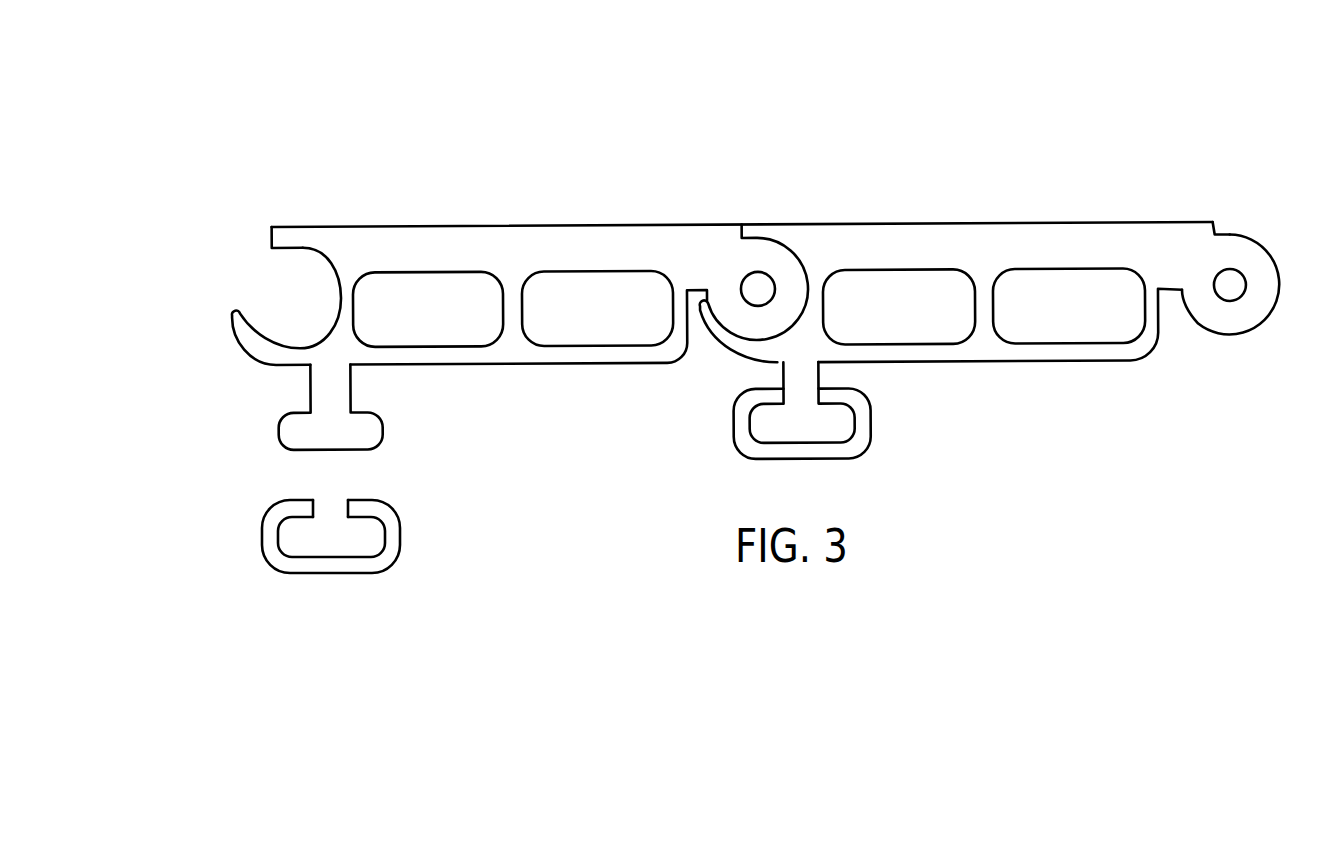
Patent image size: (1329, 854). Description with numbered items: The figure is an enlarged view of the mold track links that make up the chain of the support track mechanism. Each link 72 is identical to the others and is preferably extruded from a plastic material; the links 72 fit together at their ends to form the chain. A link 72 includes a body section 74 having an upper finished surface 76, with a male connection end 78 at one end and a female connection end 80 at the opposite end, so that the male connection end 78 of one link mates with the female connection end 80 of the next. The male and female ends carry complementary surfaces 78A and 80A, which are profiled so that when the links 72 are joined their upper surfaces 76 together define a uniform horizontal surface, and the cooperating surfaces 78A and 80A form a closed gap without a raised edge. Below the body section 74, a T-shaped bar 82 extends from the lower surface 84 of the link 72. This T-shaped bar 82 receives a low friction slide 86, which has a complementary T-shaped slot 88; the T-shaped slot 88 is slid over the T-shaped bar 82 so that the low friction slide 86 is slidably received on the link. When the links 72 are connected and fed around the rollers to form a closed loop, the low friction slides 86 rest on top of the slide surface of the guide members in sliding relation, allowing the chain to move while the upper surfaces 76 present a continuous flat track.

The link 72 is at (445, 225).
The body section 74 is at (624, 257).
The upper finished surface 76 is at (387, 227).
The male connection end 78 is at (783, 317).
The complementary surface of male connection end 78A is at (1217, 227).
The female connection end 80 is at (317, 332).
The complementary surface of female connection end 80A is at (271, 236).
The T-shaped bar 82 is at (330, 417).
The lower surface 84 is at (587, 363).
The low friction slide 86 is at (334, 545).
The T-shaped slot 88 is at (334, 545).